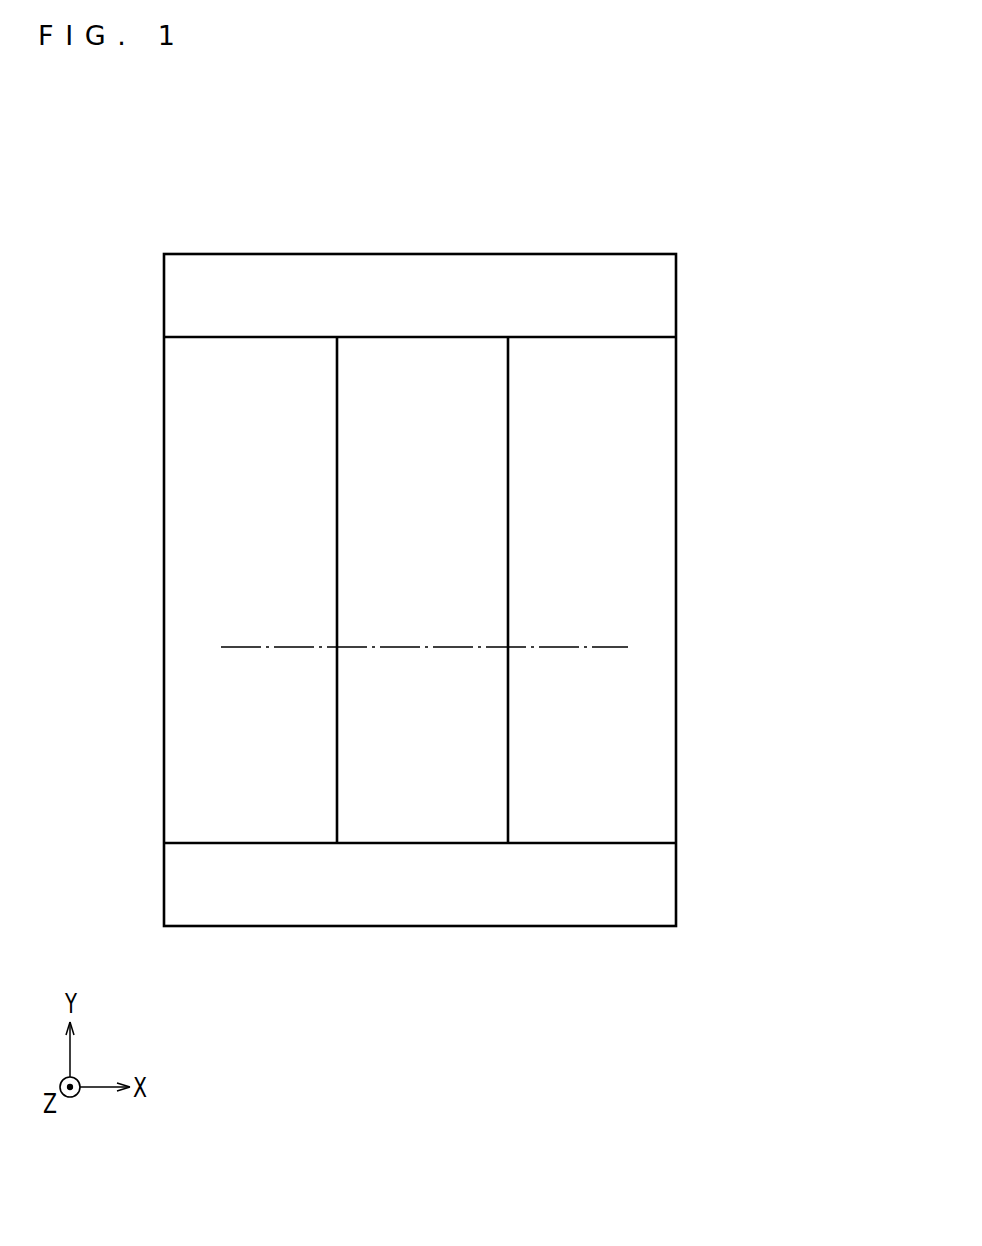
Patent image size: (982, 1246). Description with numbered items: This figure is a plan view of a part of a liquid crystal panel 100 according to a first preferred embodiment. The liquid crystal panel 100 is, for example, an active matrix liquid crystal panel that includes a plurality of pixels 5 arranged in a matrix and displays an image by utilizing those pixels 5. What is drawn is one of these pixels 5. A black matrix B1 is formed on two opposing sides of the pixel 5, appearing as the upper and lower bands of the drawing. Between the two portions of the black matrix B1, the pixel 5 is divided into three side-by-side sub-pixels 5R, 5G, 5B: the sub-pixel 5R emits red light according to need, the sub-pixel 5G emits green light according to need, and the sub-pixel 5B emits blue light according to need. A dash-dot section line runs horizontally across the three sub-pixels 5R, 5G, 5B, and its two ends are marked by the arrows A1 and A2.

The liquid crystal panel 100 is at (685, 188).
The black matrix B1 is at (658, 293).
The pixel 5 is at (420, 702).
The sub-pixel 5R is at (267, 798).
The sub-pixel 5G is at (419, 798).
The sub-pixel 5B is at (563, 800).
The section line end A1 is at (232, 648).
The section line end A2 is at (620, 648).